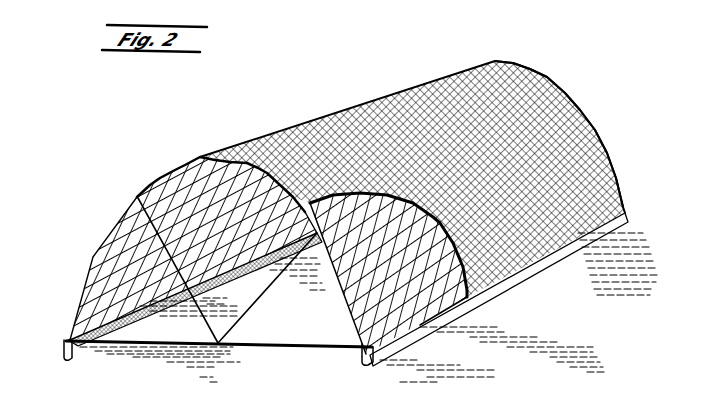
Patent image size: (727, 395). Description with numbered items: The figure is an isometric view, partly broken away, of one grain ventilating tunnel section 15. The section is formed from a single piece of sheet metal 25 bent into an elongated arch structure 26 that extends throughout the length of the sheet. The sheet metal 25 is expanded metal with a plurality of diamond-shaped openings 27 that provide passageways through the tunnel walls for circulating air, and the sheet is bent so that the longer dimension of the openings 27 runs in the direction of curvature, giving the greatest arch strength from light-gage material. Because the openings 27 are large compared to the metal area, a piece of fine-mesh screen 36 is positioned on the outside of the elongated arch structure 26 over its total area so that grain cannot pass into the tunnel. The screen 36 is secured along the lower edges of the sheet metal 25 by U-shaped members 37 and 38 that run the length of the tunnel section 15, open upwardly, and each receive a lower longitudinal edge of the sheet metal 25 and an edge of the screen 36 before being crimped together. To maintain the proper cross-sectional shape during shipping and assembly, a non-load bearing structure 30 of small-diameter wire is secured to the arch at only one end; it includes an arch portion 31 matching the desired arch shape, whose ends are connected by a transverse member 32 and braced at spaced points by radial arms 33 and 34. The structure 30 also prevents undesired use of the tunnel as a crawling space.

The canopy cover 15 is at (313, 111).
The screen 36 is at (454, 78).
The elongated arch structure 26 is at (134, 180).
The arch portion 31 is at (181, 168).
The radial arm 33 is at (160, 237).
The radial arm 34 is at (267, 268).
The sheet metal 25 is at (442, 327).
The U-shaped member 37 is at (520, 277).
The transverse member 32 is at (137, 340).
The non-load bearing structure 30 is at (263, 350).
The U-shaped member 38 is at (63, 356).
The openings 27 is at (400, 350).